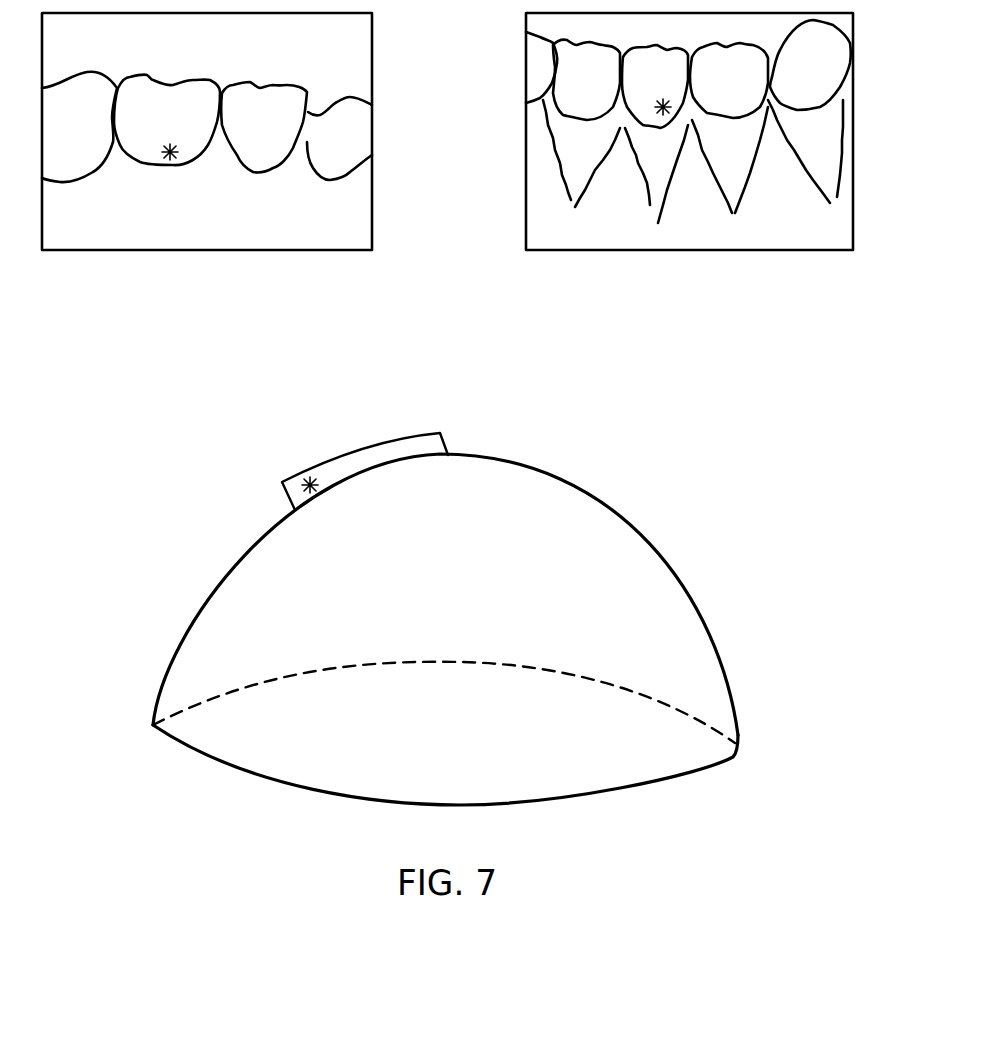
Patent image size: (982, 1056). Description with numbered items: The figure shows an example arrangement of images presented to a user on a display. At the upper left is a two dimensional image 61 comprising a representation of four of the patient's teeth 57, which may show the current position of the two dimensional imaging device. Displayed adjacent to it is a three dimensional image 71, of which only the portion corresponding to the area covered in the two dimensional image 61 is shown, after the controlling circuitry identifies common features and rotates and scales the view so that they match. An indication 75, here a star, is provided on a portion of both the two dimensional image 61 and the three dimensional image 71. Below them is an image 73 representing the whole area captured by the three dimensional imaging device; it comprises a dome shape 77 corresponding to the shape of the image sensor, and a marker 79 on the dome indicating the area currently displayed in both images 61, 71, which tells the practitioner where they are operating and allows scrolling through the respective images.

The patient's teeth 57 is at (280, 102).
The two dimensional image 61 is at (356, 279).
The three dimensional image 71 is at (777, 253).
The image representing the area captured by the three dimensional imaging device 73 is at (445, 589).
The indication 75 is at (168, 163).
The dome shape 77 is at (593, 498).
The marker 79 is at (427, 448).